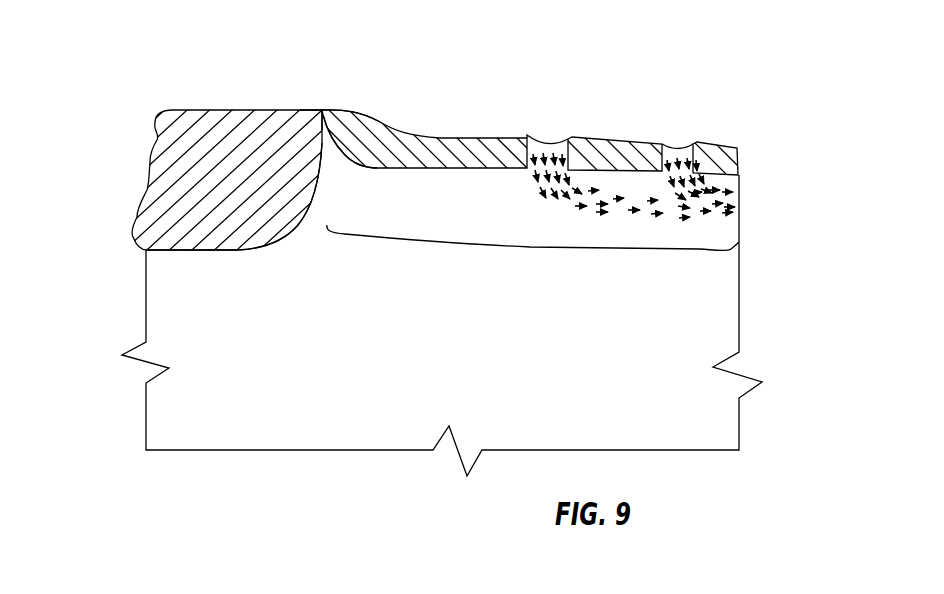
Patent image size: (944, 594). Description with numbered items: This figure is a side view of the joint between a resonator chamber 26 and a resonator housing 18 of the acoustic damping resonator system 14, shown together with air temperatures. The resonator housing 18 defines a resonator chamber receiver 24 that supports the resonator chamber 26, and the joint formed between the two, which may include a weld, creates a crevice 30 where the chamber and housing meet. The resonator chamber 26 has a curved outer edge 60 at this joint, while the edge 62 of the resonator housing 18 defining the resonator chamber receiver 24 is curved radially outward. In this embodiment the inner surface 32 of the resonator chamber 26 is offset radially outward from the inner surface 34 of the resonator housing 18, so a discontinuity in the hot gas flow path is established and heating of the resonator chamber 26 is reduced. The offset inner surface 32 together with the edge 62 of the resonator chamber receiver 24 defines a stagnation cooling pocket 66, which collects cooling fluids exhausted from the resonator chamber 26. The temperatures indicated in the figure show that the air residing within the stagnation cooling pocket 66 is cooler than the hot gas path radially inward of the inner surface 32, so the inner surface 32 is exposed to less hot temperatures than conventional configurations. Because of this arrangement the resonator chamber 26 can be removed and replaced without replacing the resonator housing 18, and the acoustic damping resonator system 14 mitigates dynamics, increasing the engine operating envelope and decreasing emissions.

The acoustic damping resonator system 14 is at (781, 94).
The resonator housing 18 is at (174, 159).
The resonator chamber receiver 24 is at (322, 110).
The resonator chamber 26 is at (460, 138).
The crevice 30 is at (322, 110).
The inner surface of the resonator chamber 32 is at (467, 168).
The inner surface of the resonator housing 34 is at (220, 252).
The outer edge 60 is at (352, 163).
The edge defining the resonator chamber receiver 62 is at (293, 238).
The stagnation cooling pocket 66 is at (740, 174).